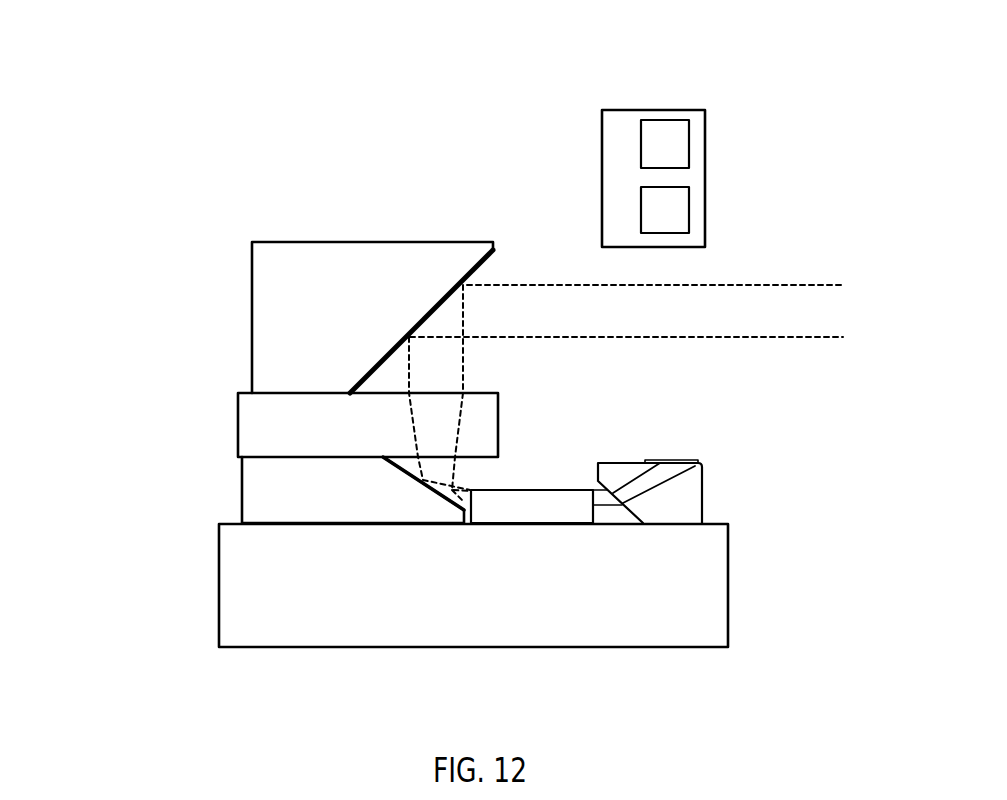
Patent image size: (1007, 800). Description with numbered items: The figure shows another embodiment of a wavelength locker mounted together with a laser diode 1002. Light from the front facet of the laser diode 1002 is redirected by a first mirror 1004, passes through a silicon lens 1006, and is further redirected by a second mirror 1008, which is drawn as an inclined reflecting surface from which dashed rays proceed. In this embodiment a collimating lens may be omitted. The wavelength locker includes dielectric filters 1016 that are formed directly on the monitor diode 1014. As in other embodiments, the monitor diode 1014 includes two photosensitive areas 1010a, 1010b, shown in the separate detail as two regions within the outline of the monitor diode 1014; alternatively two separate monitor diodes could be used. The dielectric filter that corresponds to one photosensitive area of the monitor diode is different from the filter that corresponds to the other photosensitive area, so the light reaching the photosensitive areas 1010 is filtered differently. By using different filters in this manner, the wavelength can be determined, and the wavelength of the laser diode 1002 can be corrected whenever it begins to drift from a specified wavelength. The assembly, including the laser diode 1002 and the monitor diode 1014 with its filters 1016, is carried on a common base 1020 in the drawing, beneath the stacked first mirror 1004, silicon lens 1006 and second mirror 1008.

The laser diode 1002 is at (480, 513).
The first mirror 1004 is at (242, 493).
The silicon lens 1006 is at (240, 423).
The second mirror 1008 is at (252, 328).
The photosensitive areas 1010 is at (670, 460).
The first photosensitive area 1010a is at (665, 120).
The second photosensitive area 1010b is at (641, 212).
The monitor diode 1014 is at (705, 145).
The dielectric filters 1016 is at (630, 508).
The substrate / base 1020 is at (660, 648).